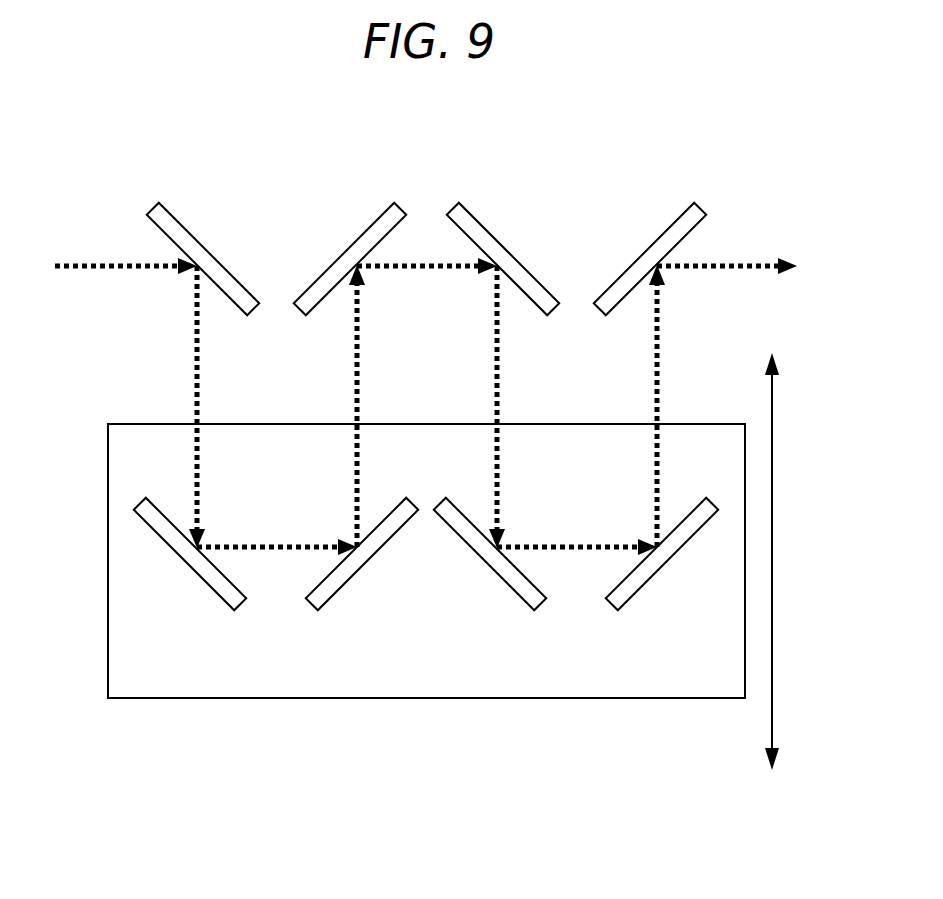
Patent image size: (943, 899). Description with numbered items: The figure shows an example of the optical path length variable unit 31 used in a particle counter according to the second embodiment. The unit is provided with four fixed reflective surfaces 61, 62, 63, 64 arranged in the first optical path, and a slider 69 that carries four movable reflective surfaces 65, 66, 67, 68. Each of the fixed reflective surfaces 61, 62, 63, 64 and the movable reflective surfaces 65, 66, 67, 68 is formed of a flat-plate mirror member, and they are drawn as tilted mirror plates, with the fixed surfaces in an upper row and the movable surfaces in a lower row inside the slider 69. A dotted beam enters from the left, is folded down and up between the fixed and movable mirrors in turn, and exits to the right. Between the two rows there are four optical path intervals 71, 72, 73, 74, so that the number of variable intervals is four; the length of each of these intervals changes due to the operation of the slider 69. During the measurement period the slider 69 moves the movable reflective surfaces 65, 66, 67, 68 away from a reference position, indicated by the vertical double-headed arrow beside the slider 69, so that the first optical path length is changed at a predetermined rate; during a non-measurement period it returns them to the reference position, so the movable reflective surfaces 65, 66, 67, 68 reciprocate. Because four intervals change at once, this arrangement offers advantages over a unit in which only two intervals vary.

The optical path length variable unit 31 is at (783, 142).
The fixed reflective surface 61 is at (170, 220).
The fixed reflective surface 62 is at (382, 220).
The fixed reflective surface 63 is at (472, 220).
The fixed reflective surface 64 is at (683, 220).
The movable reflective surface 65 is at (223, 593).
The movable reflective surface 66 is at (332, 593).
The movable reflective surface 67 is at (523, 593).
The movable reflective surface 68 is at (631, 593).
The slider 69 is at (716, 431).
The optical path interval 71 is at (195, 385).
The optical path interval 72 is at (359, 385).
The optical path interval 73 is at (495, 385).
The optical path interval 74 is at (659, 385).